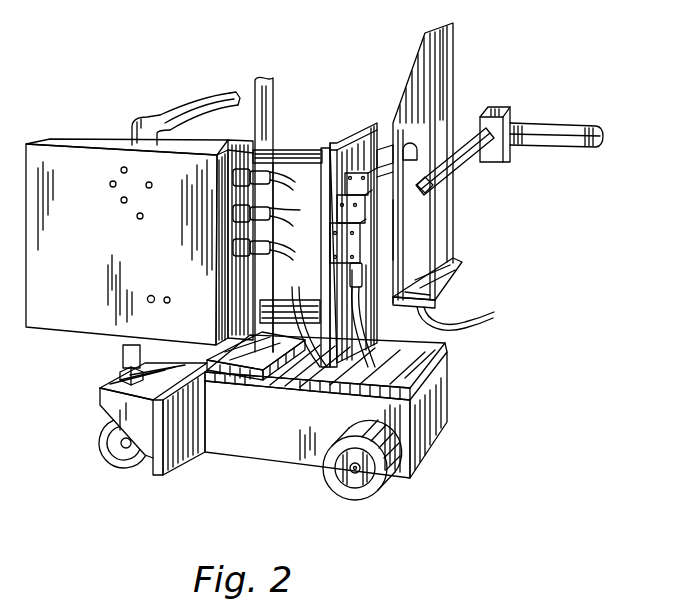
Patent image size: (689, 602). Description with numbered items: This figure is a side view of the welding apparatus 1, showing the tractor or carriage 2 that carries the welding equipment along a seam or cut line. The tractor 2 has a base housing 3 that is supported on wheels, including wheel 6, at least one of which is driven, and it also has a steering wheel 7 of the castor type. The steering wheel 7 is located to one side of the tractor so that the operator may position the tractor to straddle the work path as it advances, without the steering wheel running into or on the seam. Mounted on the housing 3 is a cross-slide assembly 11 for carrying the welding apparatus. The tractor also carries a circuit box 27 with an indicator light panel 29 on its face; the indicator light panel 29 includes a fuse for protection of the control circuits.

The apparatus 1 is at (470, 214).
The tractor or carriage 2 is at (460, 383).
The base housing 3 is at (430, 428).
The wheel 6 is at (360, 500).
The steering wheel 7 is at (122, 467).
The cross-slide assembly 11 is at (470, 103).
The circuit box 27 is at (86, 281).
The indicator light panel 29 is at (97, 170).